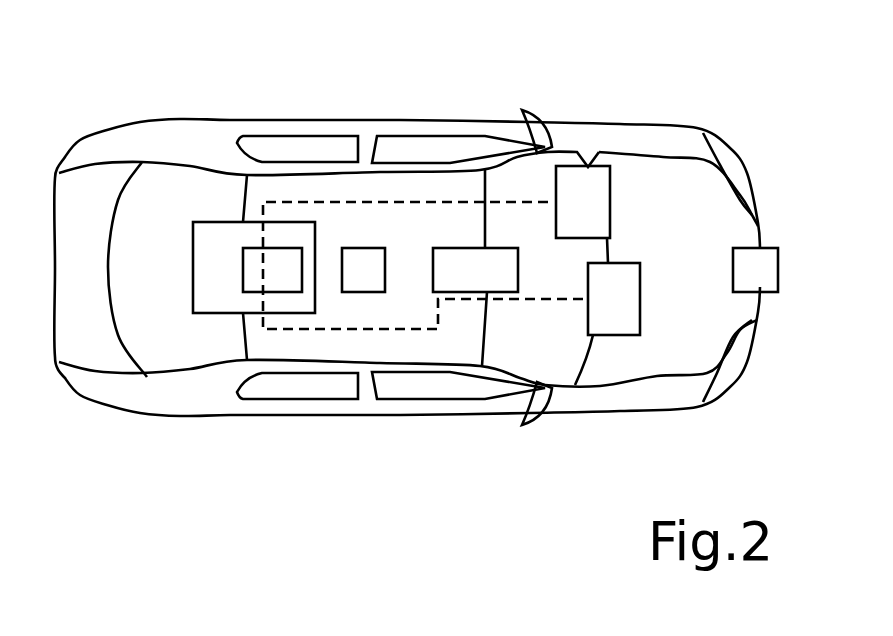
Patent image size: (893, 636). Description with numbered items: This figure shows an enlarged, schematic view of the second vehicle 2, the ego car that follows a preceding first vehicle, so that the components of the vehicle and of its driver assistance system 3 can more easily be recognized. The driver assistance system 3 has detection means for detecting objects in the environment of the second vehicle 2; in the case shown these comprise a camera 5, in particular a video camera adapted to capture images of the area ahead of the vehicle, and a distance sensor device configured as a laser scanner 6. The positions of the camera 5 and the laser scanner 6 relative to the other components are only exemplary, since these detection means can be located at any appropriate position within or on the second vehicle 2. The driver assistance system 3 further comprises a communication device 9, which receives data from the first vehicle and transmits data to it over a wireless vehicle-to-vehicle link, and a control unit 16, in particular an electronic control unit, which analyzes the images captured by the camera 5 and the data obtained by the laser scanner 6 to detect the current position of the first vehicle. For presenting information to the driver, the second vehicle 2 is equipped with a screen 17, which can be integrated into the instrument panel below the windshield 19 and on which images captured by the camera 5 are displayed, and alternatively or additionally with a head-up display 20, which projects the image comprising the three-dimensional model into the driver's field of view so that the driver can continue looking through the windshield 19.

The second vehicle 2 is at (118, 96).
The driver assistance system 3 is at (225, 233).
The control unit 16 is at (258, 277).
The communication device 9 is at (355, 260).
The camera 5 is at (473, 260).
The head-up display 20 is at (595, 180).
The screen 17 is at (627, 273).
The laser scanner 6 is at (767, 265).
The windshield 19 is at (563, 360).